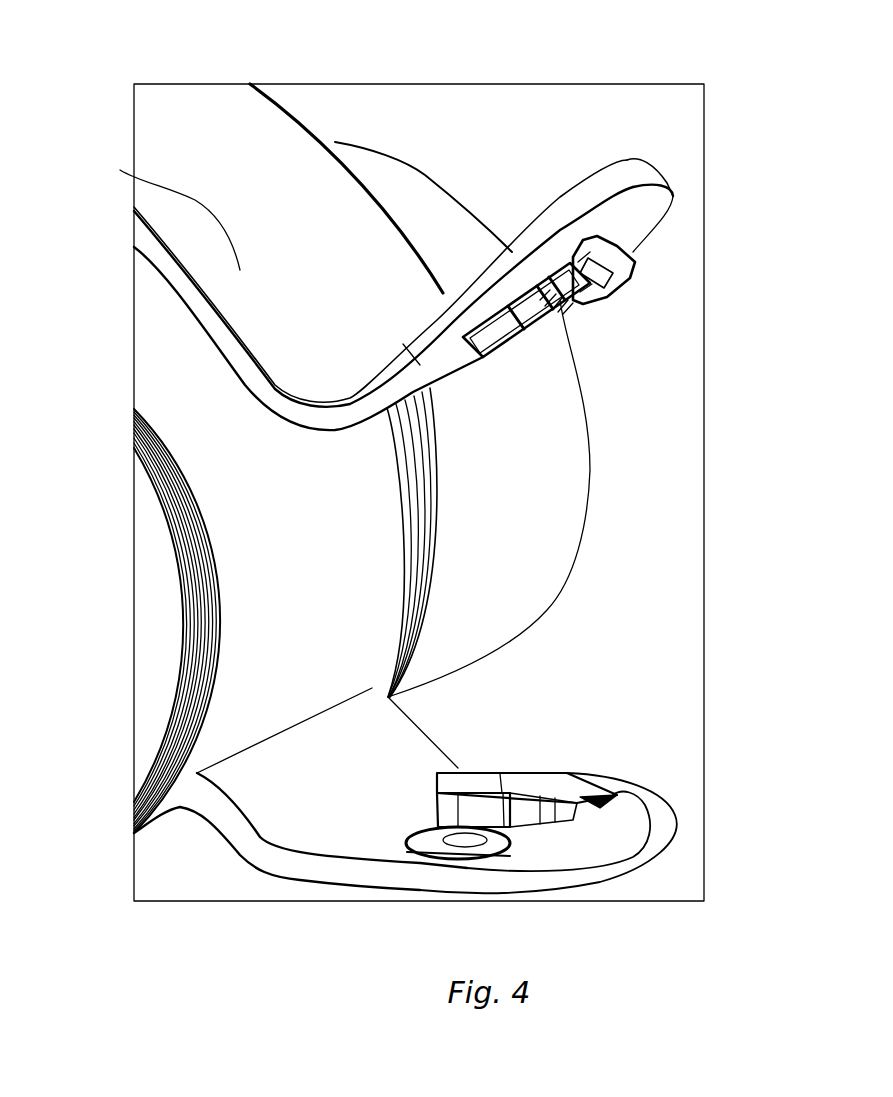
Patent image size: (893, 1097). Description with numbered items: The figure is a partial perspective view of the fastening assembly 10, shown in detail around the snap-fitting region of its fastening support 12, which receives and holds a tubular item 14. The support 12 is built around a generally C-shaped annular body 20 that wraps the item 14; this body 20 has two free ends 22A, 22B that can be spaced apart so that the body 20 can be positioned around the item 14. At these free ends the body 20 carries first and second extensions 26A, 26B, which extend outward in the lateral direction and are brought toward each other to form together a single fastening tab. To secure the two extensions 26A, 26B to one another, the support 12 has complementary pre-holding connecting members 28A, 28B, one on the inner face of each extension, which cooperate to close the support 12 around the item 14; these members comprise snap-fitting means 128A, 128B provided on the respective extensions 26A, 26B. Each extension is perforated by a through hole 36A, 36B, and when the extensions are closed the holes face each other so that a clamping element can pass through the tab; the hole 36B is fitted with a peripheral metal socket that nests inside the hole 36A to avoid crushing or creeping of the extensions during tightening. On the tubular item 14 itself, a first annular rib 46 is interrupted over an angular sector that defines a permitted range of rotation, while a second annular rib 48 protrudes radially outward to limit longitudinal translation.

The fastening assembly 10 is at (483, 150).
The fastening support 12 is at (262, 194).
The tubular item 14 is at (170, 398).
The annular body 20 is at (120, 170).
The first free end 22A is at (318, 398).
The second free end 22B is at (227, 767).
The first extension 26A is at (673, 196).
The second extension 26B is at (573, 868).
The first pre-holding connecting member 28A is at (608, 236).
The second pre-holding connecting member 28B is at (500, 860).
The first through hole 36A is at (590, 305).
The second through hole 36B is at (523, 810).
The first annular rib 46 is at (173, 588).
The second annular rib 48 is at (433, 463).
The first snap-fitting means 128A is at (603, 268).
The second snap-fitting means 128B is at (465, 856).